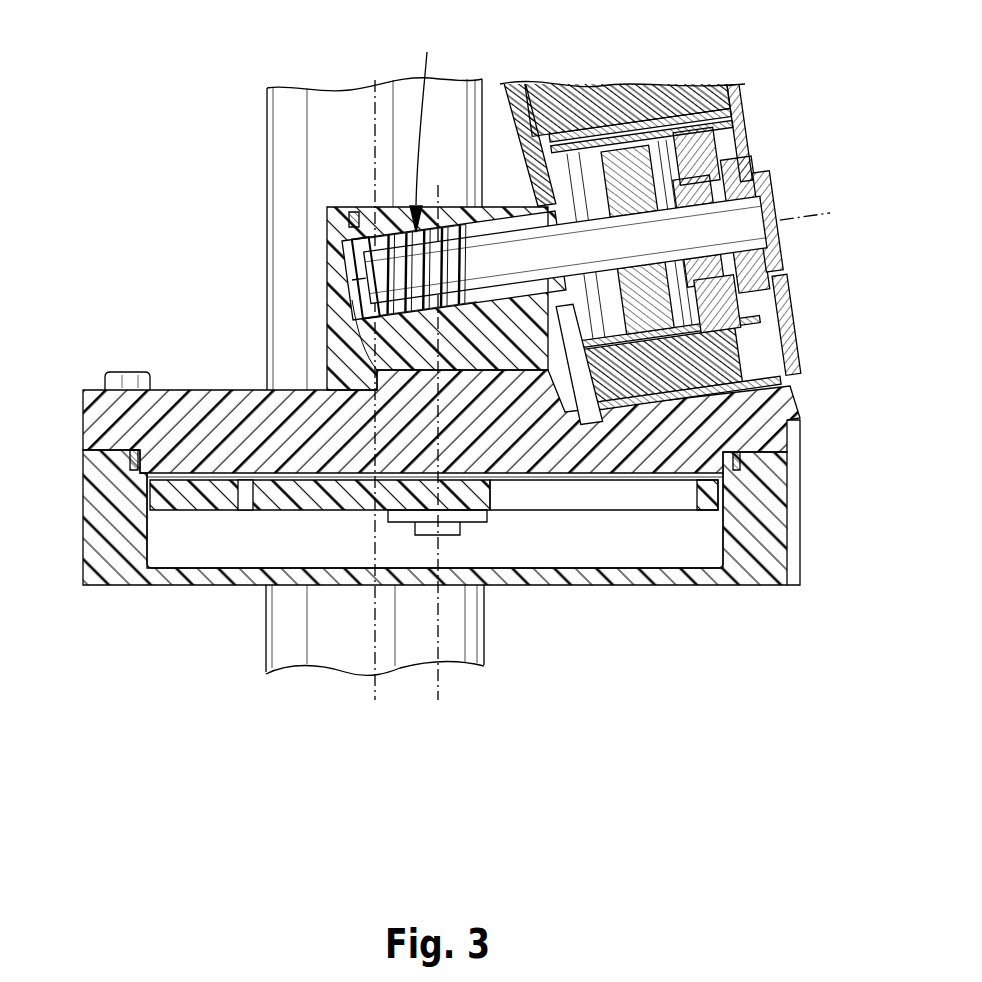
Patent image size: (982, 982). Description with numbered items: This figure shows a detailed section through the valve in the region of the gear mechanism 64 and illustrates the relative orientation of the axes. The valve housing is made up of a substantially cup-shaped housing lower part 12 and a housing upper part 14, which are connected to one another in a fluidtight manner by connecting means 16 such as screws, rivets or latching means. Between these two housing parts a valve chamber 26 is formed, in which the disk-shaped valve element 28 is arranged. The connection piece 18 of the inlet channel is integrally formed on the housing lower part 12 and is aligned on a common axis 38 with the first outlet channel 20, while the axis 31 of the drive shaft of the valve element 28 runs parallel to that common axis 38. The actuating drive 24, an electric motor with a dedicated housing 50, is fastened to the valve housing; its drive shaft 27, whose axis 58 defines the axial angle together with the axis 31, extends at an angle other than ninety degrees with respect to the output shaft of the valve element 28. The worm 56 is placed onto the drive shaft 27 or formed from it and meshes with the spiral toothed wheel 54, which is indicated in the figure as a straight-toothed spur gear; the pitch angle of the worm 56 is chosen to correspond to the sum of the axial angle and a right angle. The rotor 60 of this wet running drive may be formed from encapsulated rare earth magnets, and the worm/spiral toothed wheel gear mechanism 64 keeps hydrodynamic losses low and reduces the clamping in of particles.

The housing lower part 12 is at (764, 526).
The housing upper part 14 is at (770, 424).
The connecting means 16 is at (112, 382).
The connection piece of inlet channel 18 is at (336, 637).
The first outlet channel 20 is at (337, 135).
The actuating drive 24 is at (790, 137).
The valve chamber 26 is at (577, 544).
The drive shaft 27 is at (364, 297).
The valve element 28 is at (197, 497).
The axis 31 is at (438, 703).
The common axis 38 is at (375, 703).
The housing 50 is at (503, 96).
The spiral toothed wheel 54 is at (357, 238).
The worm 56 is at (355, 280).
The axis 58 is at (831, 205).
The rotor 60 is at (625, 182).
The gear mechanism 64 is at (428, 124).